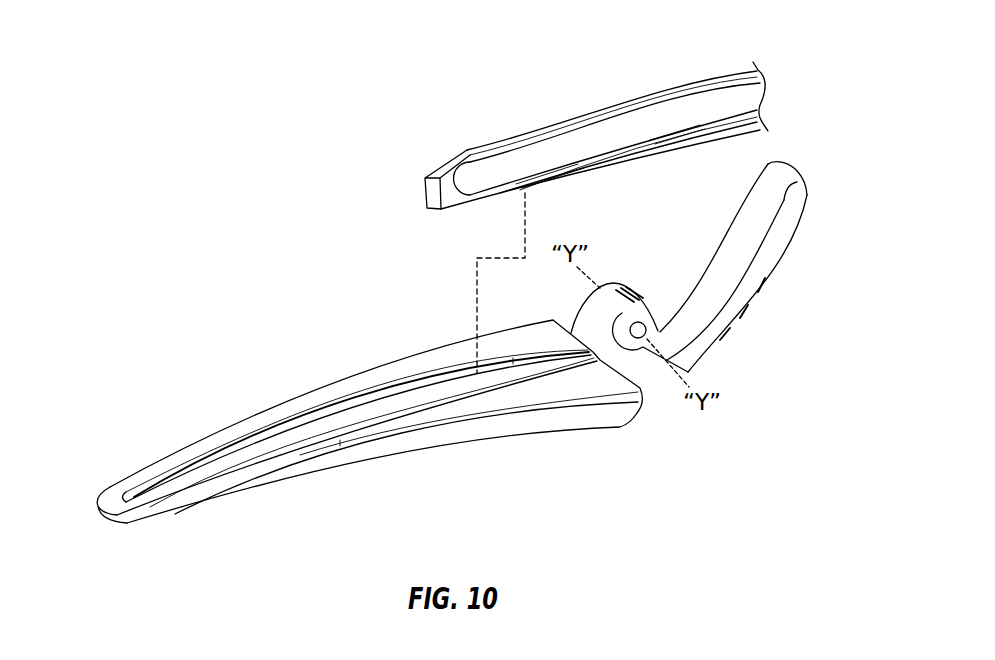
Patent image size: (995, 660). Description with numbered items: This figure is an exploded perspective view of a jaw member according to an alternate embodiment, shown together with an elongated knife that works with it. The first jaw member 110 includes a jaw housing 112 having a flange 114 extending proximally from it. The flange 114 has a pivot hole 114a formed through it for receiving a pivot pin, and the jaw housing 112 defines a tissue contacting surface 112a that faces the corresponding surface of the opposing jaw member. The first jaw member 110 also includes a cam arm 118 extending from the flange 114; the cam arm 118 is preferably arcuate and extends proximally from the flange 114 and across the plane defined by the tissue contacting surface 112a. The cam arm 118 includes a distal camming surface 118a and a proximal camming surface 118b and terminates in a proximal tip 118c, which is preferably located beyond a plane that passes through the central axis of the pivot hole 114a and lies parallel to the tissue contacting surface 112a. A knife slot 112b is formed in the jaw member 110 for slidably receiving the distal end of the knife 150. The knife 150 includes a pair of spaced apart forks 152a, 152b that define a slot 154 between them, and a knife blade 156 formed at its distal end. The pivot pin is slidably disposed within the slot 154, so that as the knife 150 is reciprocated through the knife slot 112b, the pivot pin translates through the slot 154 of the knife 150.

The first jaw member 110 is at (461, 333).
The jaw housing 112 is at (334, 421).
The tissue contacting surface 112a is at (107, 498).
The knife slot 112b is at (310, 418).
The flange 114 is at (675, 321).
The pivot hole 114a is at (644, 333).
The cam arm 118 is at (777, 257).
The distal camming surface 118a is at (760, 205).
The proximal camming surface 118b is at (797, 240).
The proximal tip 118c is at (800, 172).
The knife 150 is at (579, 124).
The fork 152a is at (649, 98).
The fork 152b is at (637, 160).
The slot 154 is at (719, 100).
The knife blade 156 is at (432, 183).